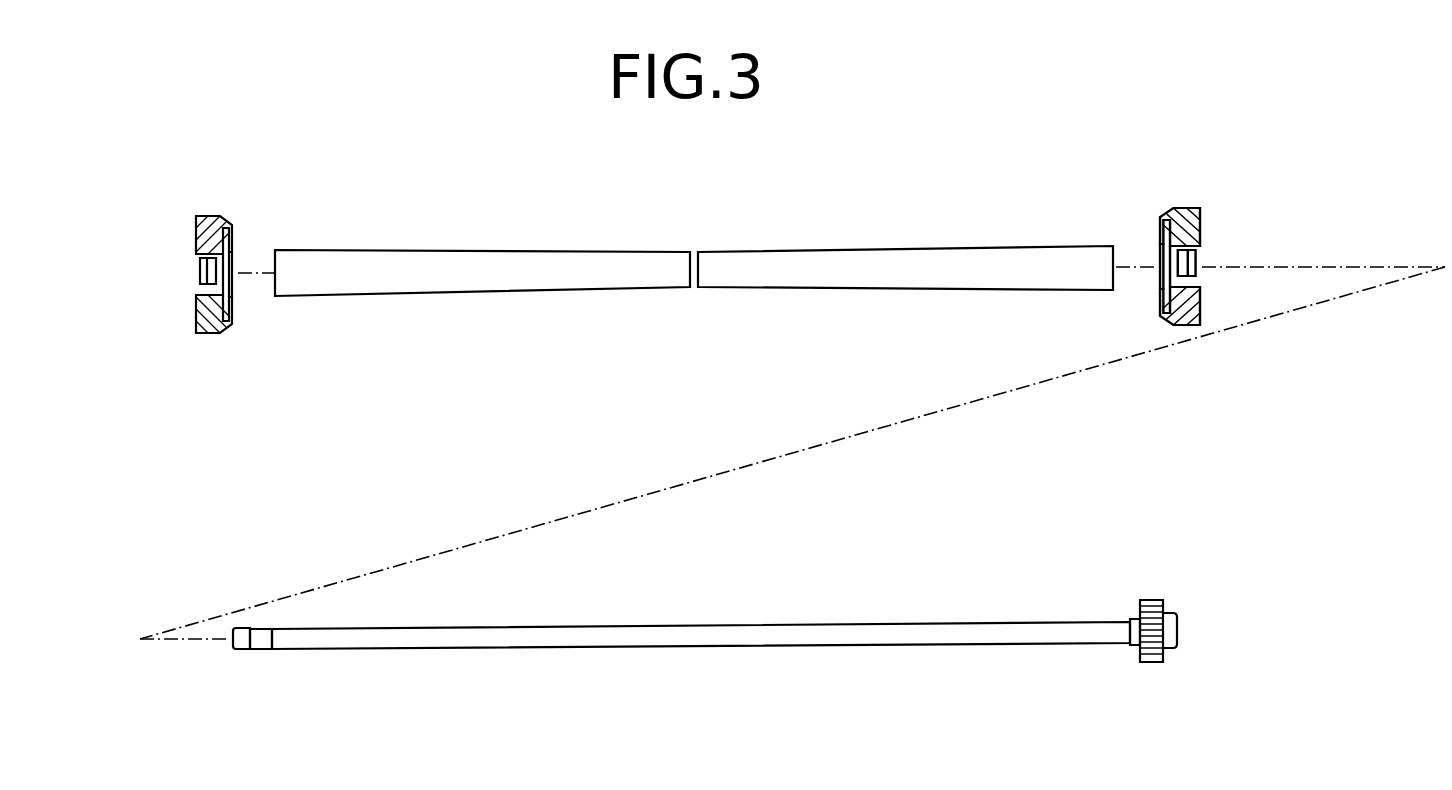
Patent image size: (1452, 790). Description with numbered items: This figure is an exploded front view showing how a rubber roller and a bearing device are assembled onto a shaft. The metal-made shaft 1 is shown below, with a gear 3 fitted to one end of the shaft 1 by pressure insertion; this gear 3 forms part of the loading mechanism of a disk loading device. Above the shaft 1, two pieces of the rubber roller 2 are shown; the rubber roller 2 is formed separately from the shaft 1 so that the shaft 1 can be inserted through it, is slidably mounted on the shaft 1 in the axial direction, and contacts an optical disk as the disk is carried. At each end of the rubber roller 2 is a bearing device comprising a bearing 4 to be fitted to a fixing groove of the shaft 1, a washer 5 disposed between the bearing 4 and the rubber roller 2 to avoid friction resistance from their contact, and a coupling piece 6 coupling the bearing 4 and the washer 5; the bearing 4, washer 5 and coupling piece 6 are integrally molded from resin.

The shaft 1 is at (928, 644).
The rubber roller 2 is at (575, 257).
The gear 3 is at (1155, 600).
The bearing 4 is at (196, 268).
The washer 5 is at (232, 263).
The coupling piece 6 is at (213, 215).